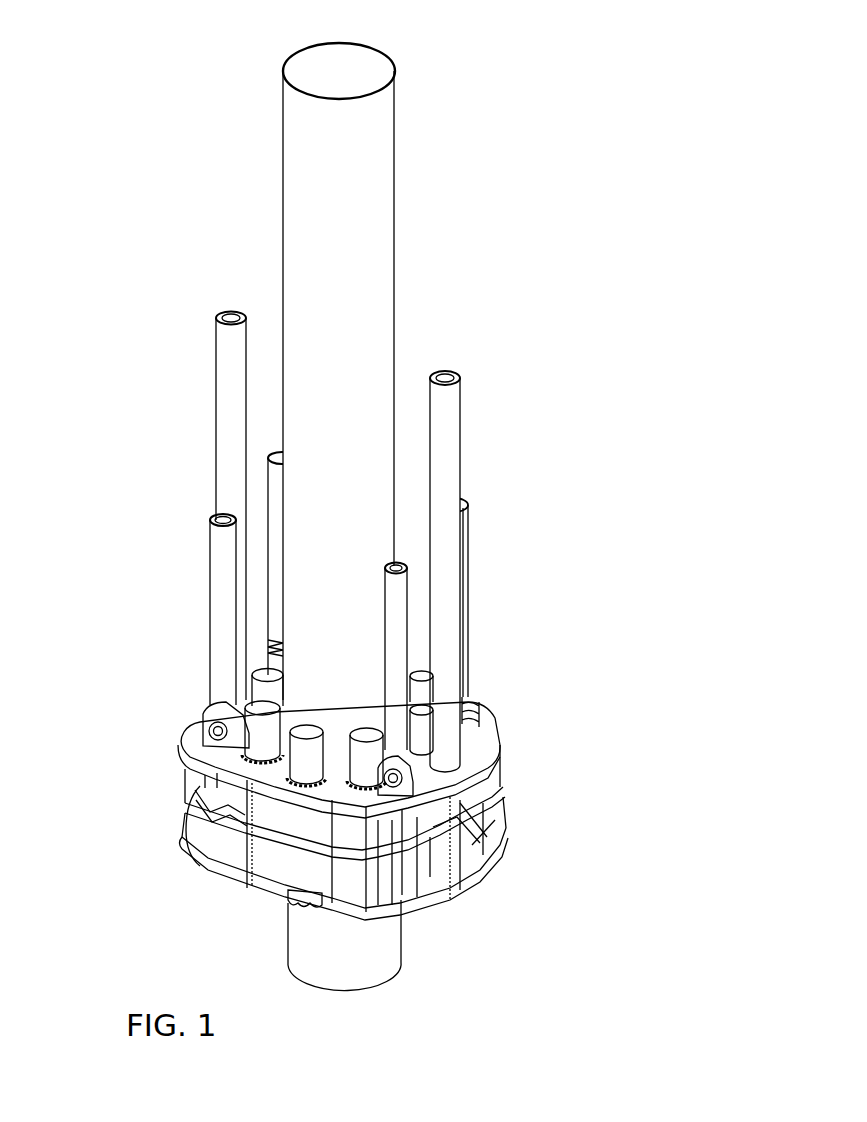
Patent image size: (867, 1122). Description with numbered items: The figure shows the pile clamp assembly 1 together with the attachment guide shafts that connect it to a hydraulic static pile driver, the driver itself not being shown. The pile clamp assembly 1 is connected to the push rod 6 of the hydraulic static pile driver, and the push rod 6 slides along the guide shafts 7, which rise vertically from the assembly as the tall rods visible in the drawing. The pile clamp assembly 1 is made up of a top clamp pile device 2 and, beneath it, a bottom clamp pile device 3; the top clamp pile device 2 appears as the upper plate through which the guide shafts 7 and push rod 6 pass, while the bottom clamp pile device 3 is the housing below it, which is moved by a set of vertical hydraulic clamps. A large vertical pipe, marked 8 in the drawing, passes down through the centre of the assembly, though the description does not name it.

The pile clamp assembly 1 is at (359, 517).
The top clamp pile device 2 is at (286, 741).
The bottom clamp pile device 3 is at (267, 838).
The push rod 6 is at (510, 612).
The guide shaft 7 is at (506, 567).
The pipe 8 is at (433, 517).